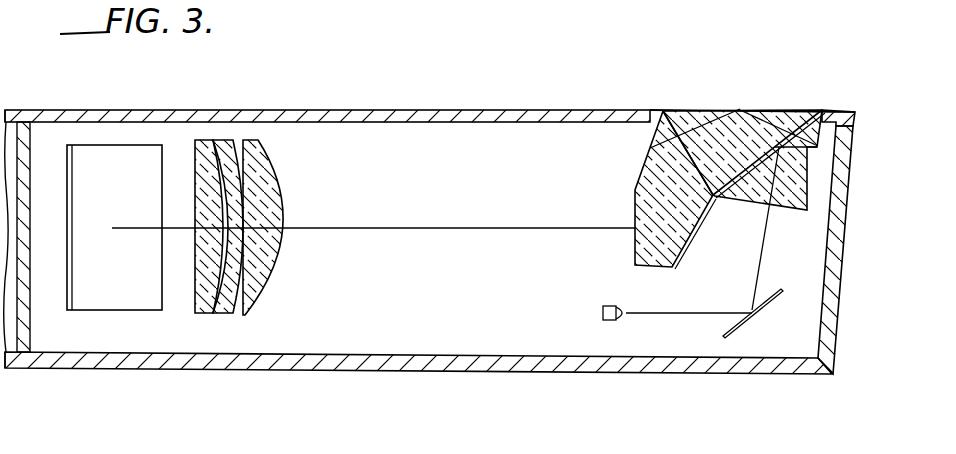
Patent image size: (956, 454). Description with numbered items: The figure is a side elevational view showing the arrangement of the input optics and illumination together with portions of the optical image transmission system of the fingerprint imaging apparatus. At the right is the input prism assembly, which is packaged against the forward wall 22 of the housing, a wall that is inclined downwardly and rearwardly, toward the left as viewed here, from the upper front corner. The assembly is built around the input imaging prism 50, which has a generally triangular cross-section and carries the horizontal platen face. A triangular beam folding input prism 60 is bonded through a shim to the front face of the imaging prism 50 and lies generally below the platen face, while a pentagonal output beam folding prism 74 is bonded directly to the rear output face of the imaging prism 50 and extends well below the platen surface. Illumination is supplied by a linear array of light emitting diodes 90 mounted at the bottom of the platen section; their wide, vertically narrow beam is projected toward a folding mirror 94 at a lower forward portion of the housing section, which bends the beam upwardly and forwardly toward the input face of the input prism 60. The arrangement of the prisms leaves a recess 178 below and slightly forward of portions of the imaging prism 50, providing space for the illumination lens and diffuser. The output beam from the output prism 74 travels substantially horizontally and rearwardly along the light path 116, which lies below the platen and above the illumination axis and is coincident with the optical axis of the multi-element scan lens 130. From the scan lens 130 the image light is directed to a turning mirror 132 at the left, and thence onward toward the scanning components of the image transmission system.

The forward wall 22 is at (845, 335).
The input imaging prism 50 is at (757, 100).
The beam folding input prism 60 is at (779, 220).
The output beam folding prism 74 is at (636, 176).
The light emitting diodes 90 is at (618, 320).
The folding mirror 94 is at (770, 308).
The light path 116 is at (408, 228).
The multi-element scan lens 130 is at (281, 170).
The turning mirror 132 is at (115, 311).
The recess 178 is at (692, 272).